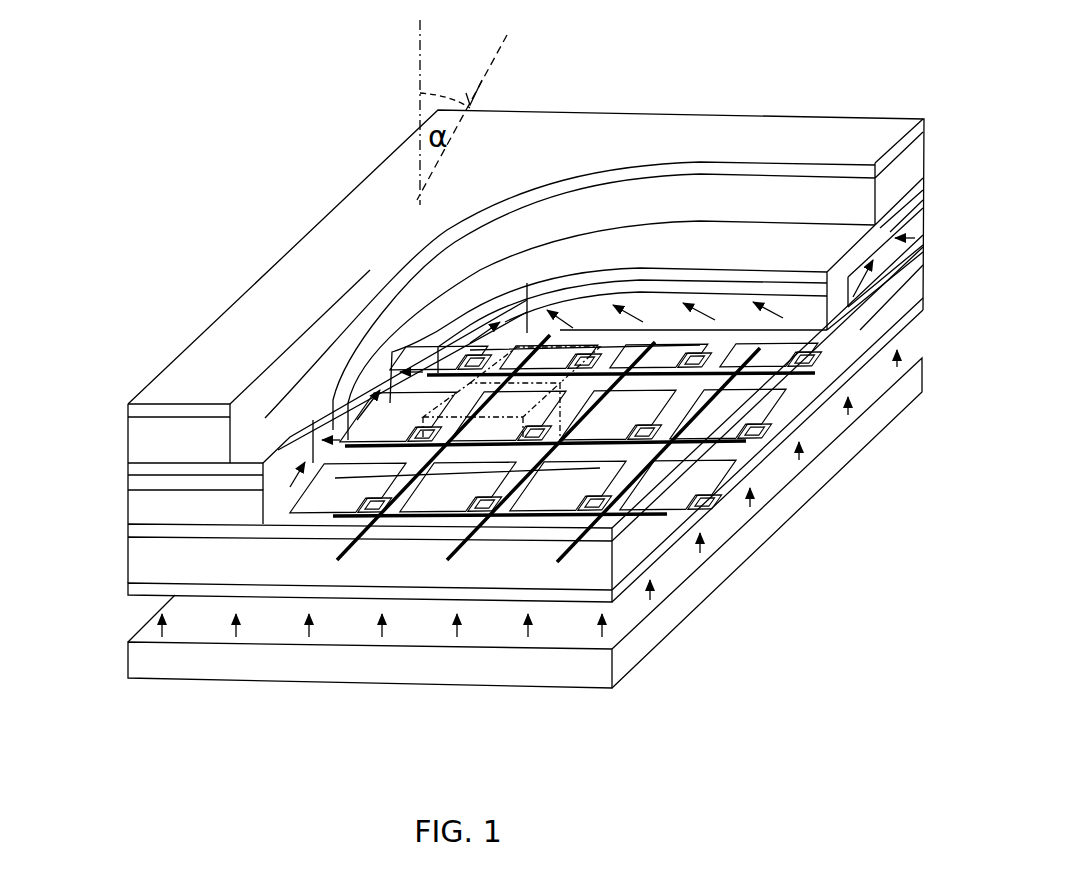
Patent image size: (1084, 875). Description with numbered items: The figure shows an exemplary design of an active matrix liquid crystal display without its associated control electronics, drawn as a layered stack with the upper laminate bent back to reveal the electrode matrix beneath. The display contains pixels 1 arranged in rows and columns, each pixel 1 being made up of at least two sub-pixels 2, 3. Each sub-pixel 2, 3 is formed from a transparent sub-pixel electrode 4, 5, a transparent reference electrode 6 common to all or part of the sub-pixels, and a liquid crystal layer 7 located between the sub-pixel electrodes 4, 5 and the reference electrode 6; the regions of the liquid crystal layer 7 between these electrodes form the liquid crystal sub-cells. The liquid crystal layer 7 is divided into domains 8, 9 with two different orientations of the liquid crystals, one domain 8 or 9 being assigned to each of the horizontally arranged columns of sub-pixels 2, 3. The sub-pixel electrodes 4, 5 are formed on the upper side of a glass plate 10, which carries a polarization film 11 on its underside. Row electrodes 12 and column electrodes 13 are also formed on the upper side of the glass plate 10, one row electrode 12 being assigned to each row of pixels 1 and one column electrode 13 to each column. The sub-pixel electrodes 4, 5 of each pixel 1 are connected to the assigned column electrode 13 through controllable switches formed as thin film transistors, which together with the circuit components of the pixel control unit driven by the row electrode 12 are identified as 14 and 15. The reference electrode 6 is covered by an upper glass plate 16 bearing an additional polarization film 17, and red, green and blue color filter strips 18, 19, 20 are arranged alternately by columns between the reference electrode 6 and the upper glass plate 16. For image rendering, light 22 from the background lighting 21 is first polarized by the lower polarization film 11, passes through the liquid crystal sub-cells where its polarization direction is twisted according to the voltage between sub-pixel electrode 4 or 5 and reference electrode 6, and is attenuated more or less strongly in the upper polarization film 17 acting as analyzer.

The pixel 1 is at (253, 200).
The sub-pixel 2 is at (400, 373).
The sub-pixel 3 is at (450, 290).
The sub-pixel electrode 4 is at (655, 505).
The sub-pixel electrode 5 is at (730, 412).
The reference electrode 6 is at (135, 482).
The liquid crystal layer 7 is at (135, 505).
The domain 8 is at (300, 330).
The domain 9 is at (358, 325).
The glass plate 10 is at (140, 563).
The polarization film 11 is at (143, 590).
The row electrode 12 is at (570, 548).
The column electrode 13 is at (655, 525).
The thin film transistor 14 is at (540, 470).
The thin film transistor 15 is at (700, 420).
The upper glass plate 16 is at (140, 437).
The polarization film 17 is at (133, 408).
The color filter strip 18 is at (280, 427).
The color filter strip 19 is at (307, 417).
The color filter strip 20 is at (477, 363).
The background lighting 21 is at (130, 667).
The light 22 is at (385, 625).